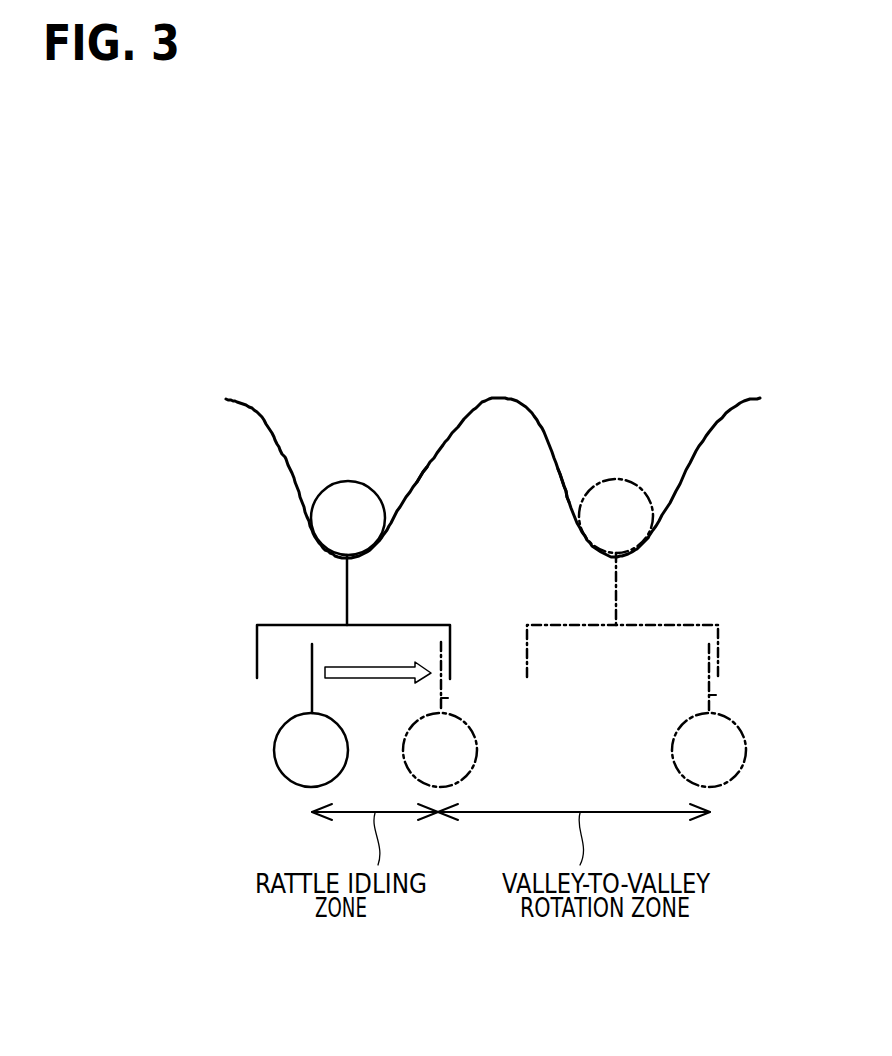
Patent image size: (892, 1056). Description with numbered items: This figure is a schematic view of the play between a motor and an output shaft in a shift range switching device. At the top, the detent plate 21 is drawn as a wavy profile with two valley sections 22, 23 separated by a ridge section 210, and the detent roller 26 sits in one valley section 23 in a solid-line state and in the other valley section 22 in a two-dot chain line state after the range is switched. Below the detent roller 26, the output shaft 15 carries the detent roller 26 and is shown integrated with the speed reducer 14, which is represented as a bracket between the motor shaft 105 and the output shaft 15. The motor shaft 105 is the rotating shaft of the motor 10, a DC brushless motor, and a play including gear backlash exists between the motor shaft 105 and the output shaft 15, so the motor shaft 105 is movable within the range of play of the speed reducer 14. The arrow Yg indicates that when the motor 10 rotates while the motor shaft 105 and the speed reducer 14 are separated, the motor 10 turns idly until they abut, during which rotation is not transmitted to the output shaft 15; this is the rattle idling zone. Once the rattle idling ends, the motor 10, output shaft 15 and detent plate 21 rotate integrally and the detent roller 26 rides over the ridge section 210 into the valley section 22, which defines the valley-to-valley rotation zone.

The detent plate 21 is at (480, 435).
The ridge section 210 is at (502, 404).
The valley section 23 is at (287, 463).
The valley section 22 is at (683, 479).
The detent roller 26 is at (347, 481).
The output shaft 15 is at (347, 588).
The speed reducer 14 is at (257, 655).
The motor shaft 105 is at (312, 697).
The motor 10 is at (275, 750).
The arrow Yg is at (387, 667).